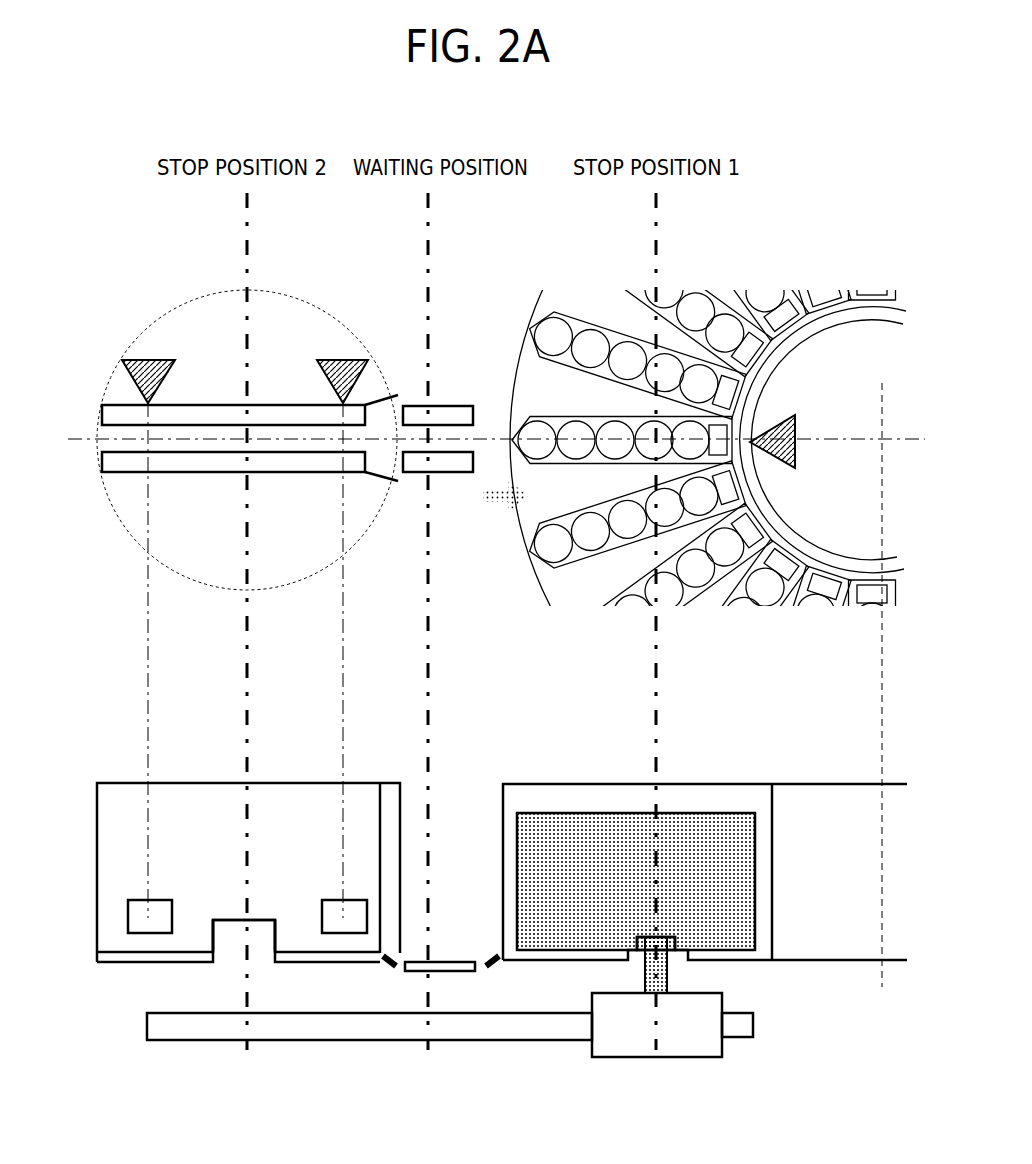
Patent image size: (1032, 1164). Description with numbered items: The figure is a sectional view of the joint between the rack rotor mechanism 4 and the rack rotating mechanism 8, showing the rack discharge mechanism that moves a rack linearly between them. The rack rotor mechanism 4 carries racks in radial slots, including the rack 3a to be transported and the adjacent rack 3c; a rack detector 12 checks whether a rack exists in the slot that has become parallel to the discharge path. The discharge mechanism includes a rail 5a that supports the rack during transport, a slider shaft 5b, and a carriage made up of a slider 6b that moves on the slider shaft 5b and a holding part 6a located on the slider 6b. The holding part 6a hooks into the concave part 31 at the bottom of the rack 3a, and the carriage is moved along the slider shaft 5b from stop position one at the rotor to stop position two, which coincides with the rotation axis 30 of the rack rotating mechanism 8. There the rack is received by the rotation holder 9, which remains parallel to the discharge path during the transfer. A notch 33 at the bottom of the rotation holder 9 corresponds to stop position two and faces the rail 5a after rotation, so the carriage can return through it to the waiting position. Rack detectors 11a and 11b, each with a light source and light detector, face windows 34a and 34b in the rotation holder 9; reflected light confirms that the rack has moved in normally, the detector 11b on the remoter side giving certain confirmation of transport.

The rack 3a is at (562, 413).
The rack 3c is at (563, 555).
The rack rotor mechanism 4 is at (860, 398).
The rail 5a is at (448, 427).
The slider shaft 5b is at (338, 1040).
The holding part 6a is at (667, 977).
The slider 6b is at (683, 1058).
The rack rotating mechanism 8 is at (138, 537).
The rotation holder 9 is at (127, 475).
The rack detector 11a is at (340, 360).
The rack detector 11b is at (152, 360).
The rack detector 12 is at (797, 467).
The rotation axis 30 is at (250, 440).
The concave part 31 is at (675, 938).
The notch 33 is at (237, 935).
The window 34a is at (353, 917).
The window 34b is at (138, 917).